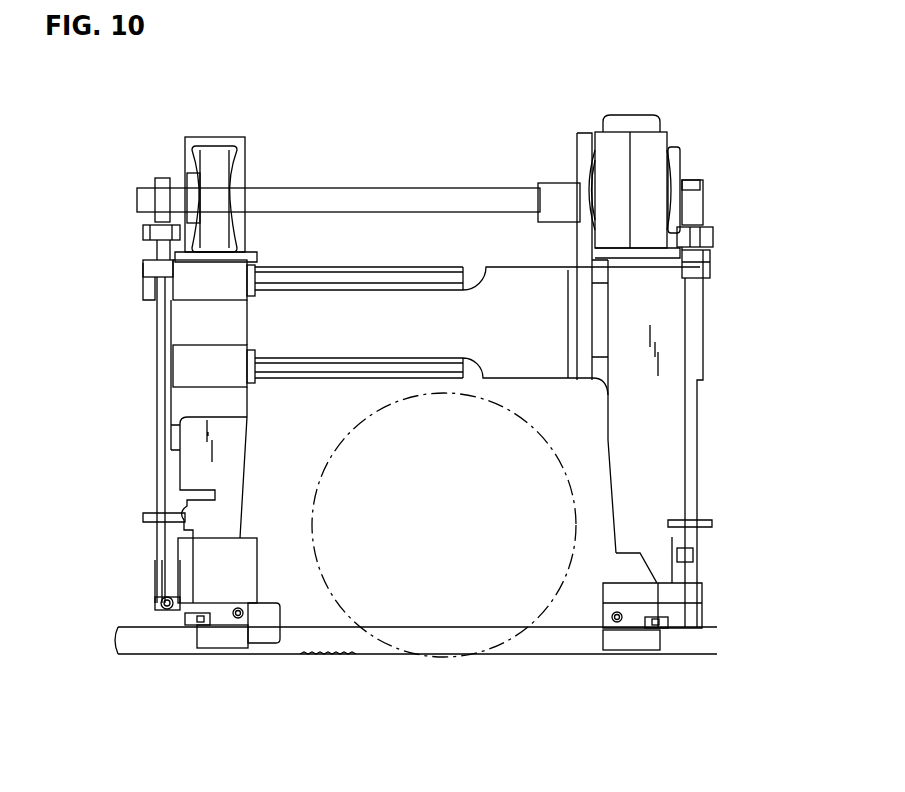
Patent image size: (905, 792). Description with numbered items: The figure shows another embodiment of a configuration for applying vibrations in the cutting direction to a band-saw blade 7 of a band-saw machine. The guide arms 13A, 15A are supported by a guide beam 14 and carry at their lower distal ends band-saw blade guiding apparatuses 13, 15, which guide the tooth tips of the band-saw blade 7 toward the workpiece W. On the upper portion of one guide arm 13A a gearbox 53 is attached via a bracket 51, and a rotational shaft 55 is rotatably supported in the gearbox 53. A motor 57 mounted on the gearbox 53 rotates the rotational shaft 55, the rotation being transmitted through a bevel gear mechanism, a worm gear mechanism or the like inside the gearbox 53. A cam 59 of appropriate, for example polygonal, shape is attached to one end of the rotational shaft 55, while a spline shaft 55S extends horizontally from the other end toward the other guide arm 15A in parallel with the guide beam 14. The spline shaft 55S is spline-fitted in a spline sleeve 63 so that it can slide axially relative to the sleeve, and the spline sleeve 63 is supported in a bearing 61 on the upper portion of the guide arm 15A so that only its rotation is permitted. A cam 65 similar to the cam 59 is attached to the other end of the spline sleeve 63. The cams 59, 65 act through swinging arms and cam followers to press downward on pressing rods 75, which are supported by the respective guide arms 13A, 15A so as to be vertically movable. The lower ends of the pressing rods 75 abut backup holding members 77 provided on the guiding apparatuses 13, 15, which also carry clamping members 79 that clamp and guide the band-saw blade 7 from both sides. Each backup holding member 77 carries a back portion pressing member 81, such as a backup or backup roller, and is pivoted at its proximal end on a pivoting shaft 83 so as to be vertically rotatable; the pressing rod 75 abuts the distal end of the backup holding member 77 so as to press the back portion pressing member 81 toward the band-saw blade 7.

The band-saw blade 7 is at (344, 637).
The band-saw blade guiding apparatus 13 is at (604, 578).
The guide arm 13A is at (614, 438).
The guide beam 14 is at (357, 339).
The band-saw blade guiding apparatus 15 is at (266, 596).
The guide arm 15A is at (233, 402).
The bracket 51 is at (578, 135).
The gearbox 53 is at (641, 150).
The rotational shaft 55 is at (548, 192).
The spline shaft 55S is at (359, 195).
The motor 57 is at (679, 166).
The cam 59 is at (702, 190).
The bearing 61 is at (215, 161).
The spline sleeve 63 is at (178, 186).
The cam 65 is at (163, 181).
The pressing rod 75 is at (157, 440).
The backup holding member 77 is at (158, 606).
The clamping member 79 is at (217, 640).
The back portion pressing member 81 is at (193, 623).
The pivoting shaft 83 is at (242, 619).
The workpiece W is at (338, 441).